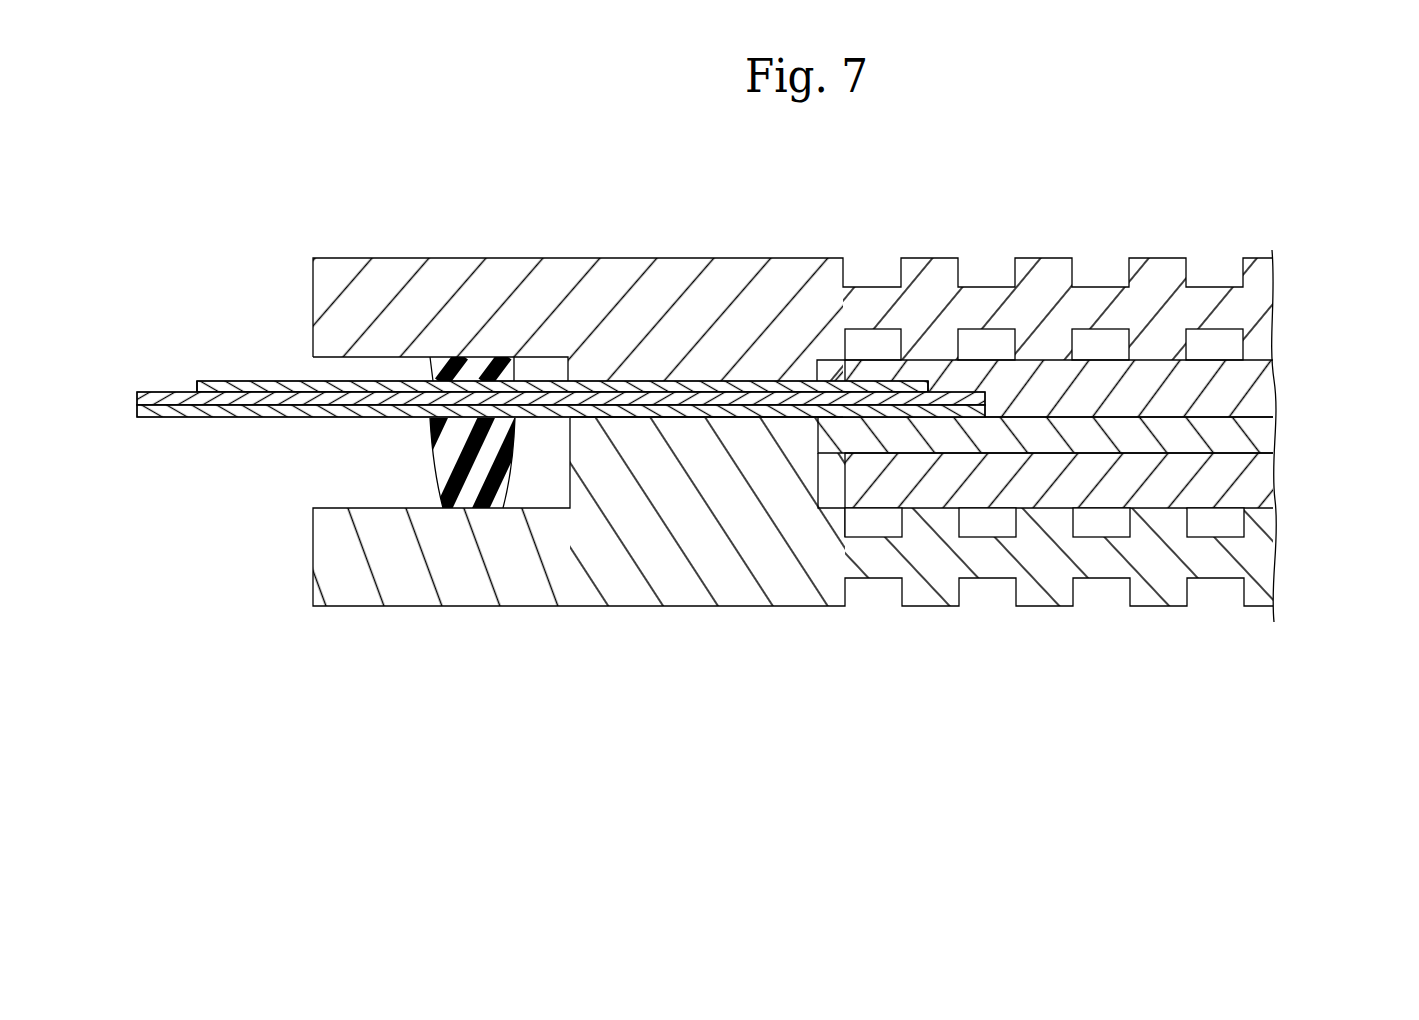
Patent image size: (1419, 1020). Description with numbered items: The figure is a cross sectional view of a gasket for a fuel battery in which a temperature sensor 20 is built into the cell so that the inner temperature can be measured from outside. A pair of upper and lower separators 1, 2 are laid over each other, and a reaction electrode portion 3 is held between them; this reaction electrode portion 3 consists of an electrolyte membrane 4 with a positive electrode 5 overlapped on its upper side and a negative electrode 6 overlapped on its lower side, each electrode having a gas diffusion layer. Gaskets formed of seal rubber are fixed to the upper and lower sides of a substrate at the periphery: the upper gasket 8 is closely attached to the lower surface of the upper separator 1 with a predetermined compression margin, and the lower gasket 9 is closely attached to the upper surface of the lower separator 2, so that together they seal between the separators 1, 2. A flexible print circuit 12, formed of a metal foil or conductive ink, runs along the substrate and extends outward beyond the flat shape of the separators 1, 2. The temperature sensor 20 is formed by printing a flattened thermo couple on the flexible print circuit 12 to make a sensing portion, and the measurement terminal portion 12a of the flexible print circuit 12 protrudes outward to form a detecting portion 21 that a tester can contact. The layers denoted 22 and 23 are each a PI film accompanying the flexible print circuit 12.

The upper separator 1 is at (1143, 268).
The lower separator 2 is at (1145, 590).
The reaction electrode portion 3 is at (1215, 355).
The electrolyte membrane 4 is at (1260, 438).
The positive electrode 5 is at (1263, 397).
The negative electrode 6 is at (1262, 475).
The upper gasket 8 is at (475, 368).
The lower gasket 9 is at (472, 480).
The flexible print circuit 12 is at (300, 395).
The measurement terminal portion 12a is at (167, 392).
The temperature sensor 20 is at (882, 372).
The detecting portion 21 is at (205, 348).
The PI film 22 is at (688, 385).
The PI film 23 is at (687, 405).